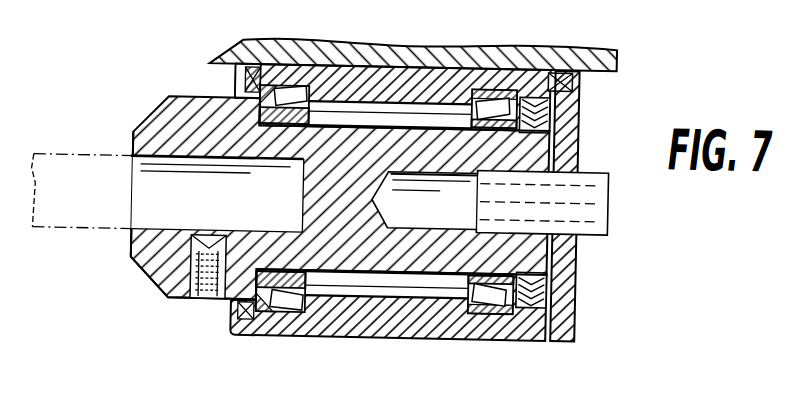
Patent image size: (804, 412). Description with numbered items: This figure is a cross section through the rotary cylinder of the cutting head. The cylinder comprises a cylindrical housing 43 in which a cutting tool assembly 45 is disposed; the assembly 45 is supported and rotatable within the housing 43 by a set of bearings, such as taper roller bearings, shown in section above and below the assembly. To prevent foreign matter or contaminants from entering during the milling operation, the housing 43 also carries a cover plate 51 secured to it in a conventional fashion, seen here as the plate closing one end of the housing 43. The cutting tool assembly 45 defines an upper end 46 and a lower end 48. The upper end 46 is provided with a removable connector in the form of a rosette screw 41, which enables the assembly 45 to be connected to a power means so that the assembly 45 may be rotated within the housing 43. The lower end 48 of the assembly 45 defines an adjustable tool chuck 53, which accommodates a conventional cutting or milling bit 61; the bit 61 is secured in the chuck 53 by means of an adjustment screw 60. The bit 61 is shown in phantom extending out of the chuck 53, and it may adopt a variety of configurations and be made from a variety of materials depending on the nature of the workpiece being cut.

The rosette screw 41 is at (600, 204).
The cylindrical housing 43 is at (560, 40).
The cutting tool assembly 45 is at (182, 117).
The upper end 46 is at (547, 140).
The lower end 48 is at (160, 270).
The cover plate 51 is at (567, 284).
The adjustable tool chuck 53 is at (133, 187).
The adjustment screw 60 is at (200, 304).
The cutting or milling bit 61 is at (78, 173).